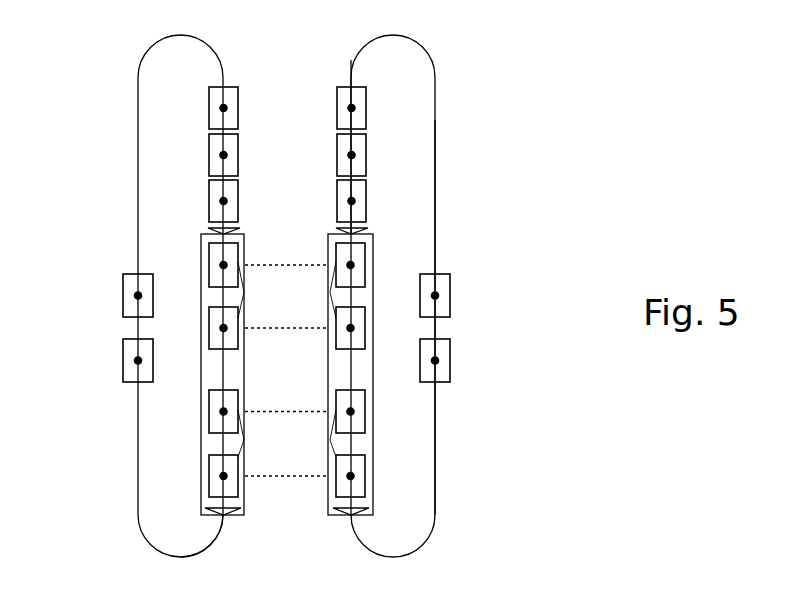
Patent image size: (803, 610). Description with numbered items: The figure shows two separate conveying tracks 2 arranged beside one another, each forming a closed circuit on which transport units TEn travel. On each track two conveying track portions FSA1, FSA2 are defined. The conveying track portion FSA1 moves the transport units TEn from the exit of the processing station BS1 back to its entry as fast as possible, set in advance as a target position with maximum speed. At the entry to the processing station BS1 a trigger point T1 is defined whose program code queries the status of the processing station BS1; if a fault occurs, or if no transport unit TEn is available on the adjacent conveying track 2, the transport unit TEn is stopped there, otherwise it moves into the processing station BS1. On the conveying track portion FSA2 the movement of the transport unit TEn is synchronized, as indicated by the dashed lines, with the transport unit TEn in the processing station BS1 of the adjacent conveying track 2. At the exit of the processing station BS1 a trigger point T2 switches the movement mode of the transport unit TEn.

The conveying track 2 is at (138, 97).
The transport unit TEn is at (210, 155).
The trigger point T1 is at (208, 228).
The trigger point T2 is at (225, 517).
The processing station BS1 is at (201, 398).
The conveying track portion FSA1 is at (435, 422).
The conveying track portion FSA2 is at (351, 365).